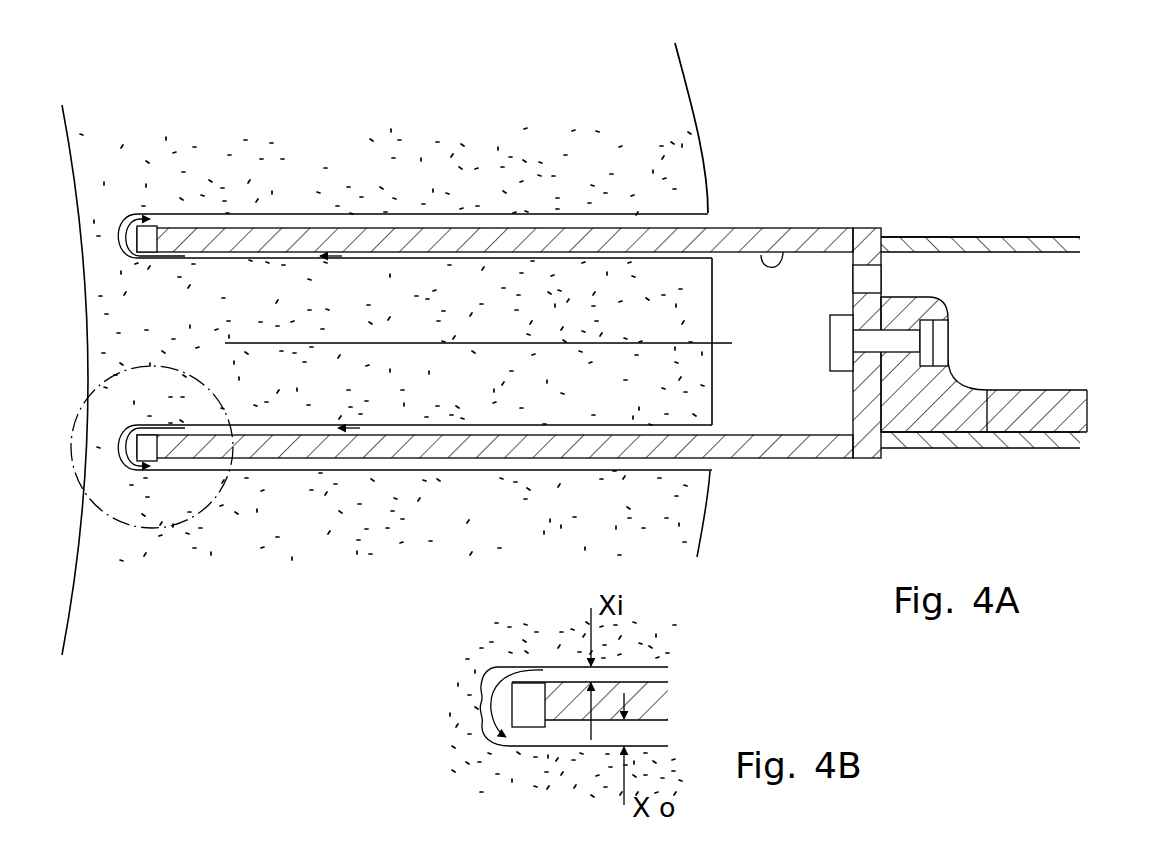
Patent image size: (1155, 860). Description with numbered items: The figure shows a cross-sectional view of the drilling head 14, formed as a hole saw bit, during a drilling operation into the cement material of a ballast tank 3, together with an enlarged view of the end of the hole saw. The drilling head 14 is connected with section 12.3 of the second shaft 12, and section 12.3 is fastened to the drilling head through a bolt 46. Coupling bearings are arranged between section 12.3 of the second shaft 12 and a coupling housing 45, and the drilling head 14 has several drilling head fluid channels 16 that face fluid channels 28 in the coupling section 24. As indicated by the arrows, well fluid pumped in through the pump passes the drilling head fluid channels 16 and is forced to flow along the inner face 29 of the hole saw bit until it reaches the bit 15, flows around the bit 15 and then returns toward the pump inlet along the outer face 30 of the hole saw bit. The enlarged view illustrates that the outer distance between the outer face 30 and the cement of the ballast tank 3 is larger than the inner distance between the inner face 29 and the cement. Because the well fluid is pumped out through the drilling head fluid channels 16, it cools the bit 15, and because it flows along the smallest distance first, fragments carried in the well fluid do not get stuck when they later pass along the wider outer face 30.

In FIG. 4A, the ballast tank 3 is at (354, 178).
In FIG. 4A, the second shaft 12 is at (1090, 432).
In FIG. 4A, the section of the second shaft 12.3 is at (1033, 412).
In FIG. 4A, the drilling head 14 is at (265, 445).
In FIG. 4B, the drilling head 14 is at (656, 705).
In FIG. 4A, the bit 15 is at (151, 470).
In FIG. 4B, the bit 15 is at (514, 703).
In FIG. 4A, the drilling head fluid channels 16 is at (862, 275).
In FIG. 4A, the coupling section 24 is at (1058, 248).
In FIG. 4A, the fluid channels 28 is at (942, 278).
In FIG. 4A, the inner face 29 is at (761, 255).
In FIG. 4A, the outer face 30 is at (224, 228).
In FIG. 4A, the coupling housing 45 is at (1010, 245).
In FIG. 4A, the bolt 46 is at (865, 347).